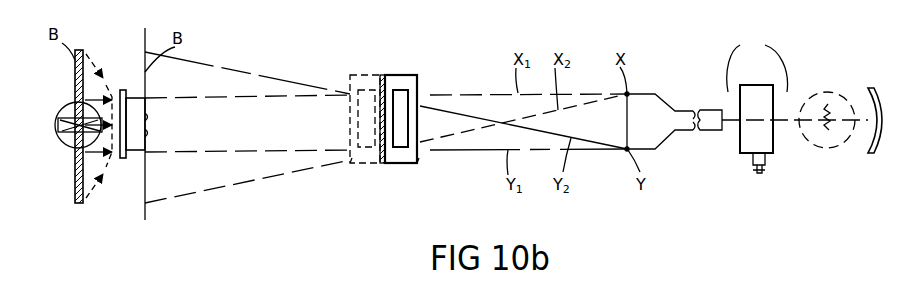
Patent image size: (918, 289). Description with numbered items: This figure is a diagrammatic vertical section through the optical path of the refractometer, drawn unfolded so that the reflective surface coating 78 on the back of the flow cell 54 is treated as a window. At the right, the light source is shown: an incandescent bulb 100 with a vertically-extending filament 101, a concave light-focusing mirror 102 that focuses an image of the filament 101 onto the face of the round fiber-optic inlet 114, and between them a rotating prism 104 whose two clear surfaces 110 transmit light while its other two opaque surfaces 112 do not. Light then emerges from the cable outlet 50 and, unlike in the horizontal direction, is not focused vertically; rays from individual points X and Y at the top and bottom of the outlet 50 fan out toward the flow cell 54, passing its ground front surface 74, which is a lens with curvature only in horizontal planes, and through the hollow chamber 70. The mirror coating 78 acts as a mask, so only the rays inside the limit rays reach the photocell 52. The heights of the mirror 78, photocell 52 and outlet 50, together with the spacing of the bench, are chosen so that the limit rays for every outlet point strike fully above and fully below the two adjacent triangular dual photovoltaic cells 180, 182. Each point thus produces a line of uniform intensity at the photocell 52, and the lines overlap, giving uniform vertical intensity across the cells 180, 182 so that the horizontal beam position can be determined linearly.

The cable outlet 50 is at (626, 153).
The photocell 52 is at (70, 164).
The flow cell 54 is at (370, 167).
The hollow chamber 70 is at (401, 106).
The front surface 74 is at (419, 155).
The reflective surface coating 78 is at (383, 93).
The incandescent bulb 100 is at (822, 92).
The filament 101 is at (827, 129).
The concave light-focusing mirror 102 is at (867, 97).
The rotating prism 104 is at (752, 164).
The clear surfaces 110 is at (757, 63).
The opaque surfaces 112 is at (756, 92).
The fiber-optic inlet 114 is at (723, 109).
The triangular dual photovoltaic cell 180 is at (76, 130).
The triangular dual photovoltaic cell 182 is at (67, 118).